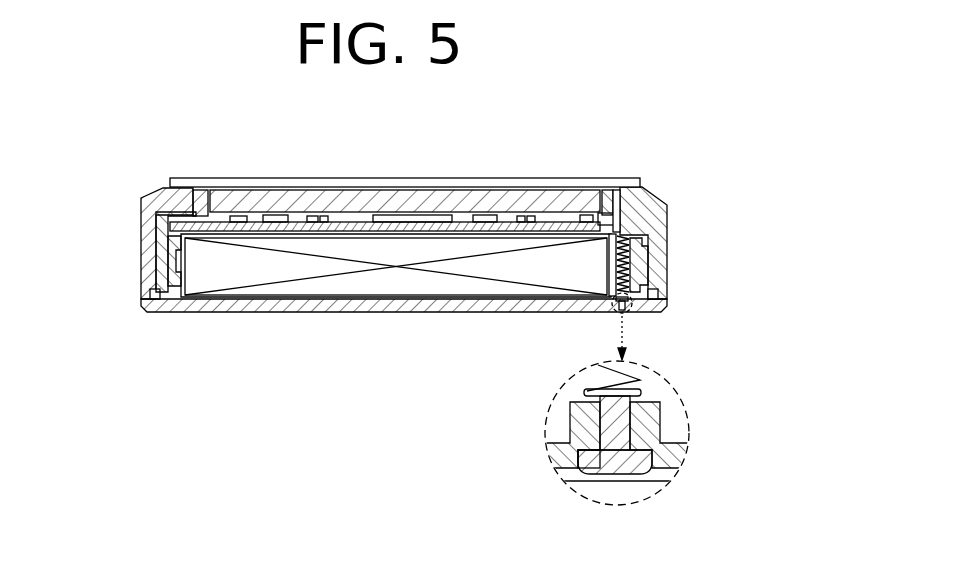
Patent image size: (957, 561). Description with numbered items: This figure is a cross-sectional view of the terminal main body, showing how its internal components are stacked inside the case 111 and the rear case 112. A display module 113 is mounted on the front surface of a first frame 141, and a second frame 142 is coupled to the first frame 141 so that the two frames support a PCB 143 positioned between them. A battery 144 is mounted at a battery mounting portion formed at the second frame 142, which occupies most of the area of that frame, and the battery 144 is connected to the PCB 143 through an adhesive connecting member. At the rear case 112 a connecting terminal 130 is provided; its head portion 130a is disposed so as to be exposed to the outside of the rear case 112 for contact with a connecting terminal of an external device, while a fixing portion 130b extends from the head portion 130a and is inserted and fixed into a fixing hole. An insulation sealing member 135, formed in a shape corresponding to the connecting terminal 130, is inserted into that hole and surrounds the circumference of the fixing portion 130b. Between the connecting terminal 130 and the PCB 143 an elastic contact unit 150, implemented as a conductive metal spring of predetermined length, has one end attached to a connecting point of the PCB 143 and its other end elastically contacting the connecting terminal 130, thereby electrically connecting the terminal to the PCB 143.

The front case 111 is at (161, 194).
The rear case 112 is at (260, 300).
The display module 113 is at (532, 200).
The first frame 141 is at (157, 222).
The second frame 142 is at (164, 263).
The PCB 143 is at (617, 205).
The battery 144 is at (397, 283).
The elastic contact unit 150 is at (641, 262).
The connecting terminal 130 is at (697, 438).
The head portion 130a is at (620, 422).
The fixing portion 130b is at (652, 462).
The insulation sealing member 135 is at (578, 458).